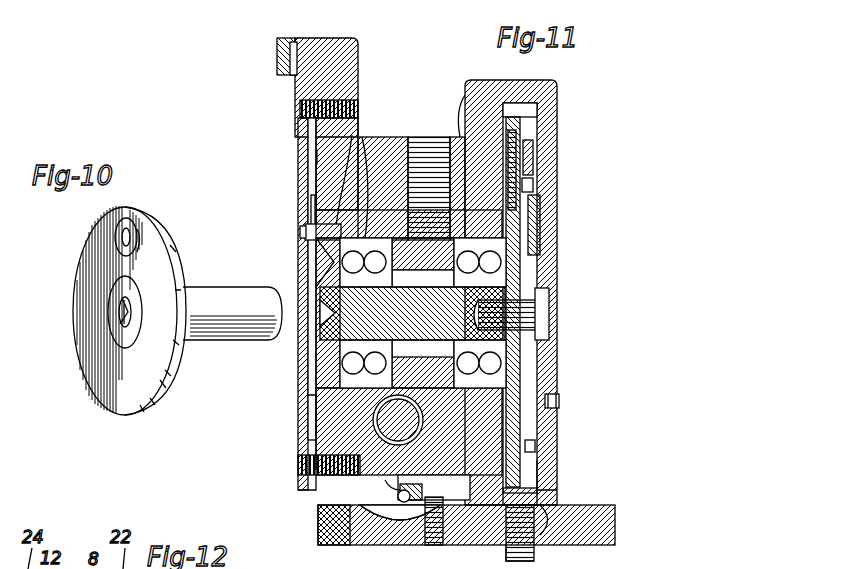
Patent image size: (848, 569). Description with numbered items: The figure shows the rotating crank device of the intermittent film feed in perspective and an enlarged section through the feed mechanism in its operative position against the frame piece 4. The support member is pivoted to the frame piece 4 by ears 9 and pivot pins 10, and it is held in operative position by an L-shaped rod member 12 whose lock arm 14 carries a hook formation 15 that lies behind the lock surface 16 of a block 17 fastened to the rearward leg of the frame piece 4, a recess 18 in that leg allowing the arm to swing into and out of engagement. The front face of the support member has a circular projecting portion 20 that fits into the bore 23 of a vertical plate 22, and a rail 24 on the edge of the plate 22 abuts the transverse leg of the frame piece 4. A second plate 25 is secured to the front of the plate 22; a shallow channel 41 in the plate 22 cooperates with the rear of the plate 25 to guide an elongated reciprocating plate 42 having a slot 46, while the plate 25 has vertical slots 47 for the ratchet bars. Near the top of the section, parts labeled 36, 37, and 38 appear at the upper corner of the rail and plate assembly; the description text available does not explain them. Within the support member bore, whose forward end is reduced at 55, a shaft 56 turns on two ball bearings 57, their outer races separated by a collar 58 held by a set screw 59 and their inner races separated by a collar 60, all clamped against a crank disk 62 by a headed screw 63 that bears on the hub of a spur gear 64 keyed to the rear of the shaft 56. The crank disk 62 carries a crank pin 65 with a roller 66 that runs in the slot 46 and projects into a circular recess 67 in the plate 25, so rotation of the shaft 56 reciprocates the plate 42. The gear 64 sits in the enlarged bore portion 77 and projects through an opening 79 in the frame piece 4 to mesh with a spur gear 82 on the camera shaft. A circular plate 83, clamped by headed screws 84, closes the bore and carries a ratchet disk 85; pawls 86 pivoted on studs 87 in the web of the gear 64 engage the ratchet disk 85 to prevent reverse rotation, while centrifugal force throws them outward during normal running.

In FIG. 11, the frame piece 4 is at (600, 508).
In FIG. 11, the ears 9 is at (550, 500).
In FIG. 11, the pivot pins 10 is at (548, 512).
In FIG. 11, the rod member 12 is at (300, 462).
In FIG. 11, the lock arm 14 is at (395, 487).
In FIG. 11, the hook formation 15 is at (388, 520).
In FIG. 11, the lock surface 16 is at (410, 500).
In FIG. 11, the block 17 is at (440, 522).
In FIG. 11, the recess 18 is at (345, 520).
In FIG. 11, the projecting portion 20 is at (376, 137).
In FIG. 11, the plate 22 is at (352, 98).
In FIG. 11, the bore 23 is at (362, 128).
In FIG. 11, the rail 24 is at (362, 62).
In FIG. 11, the plate 25 is at (300, 152).
In FIG. 11, the lug 36 is at (292, 40).
In FIG. 11, the pin 37 is at (291, 72).
In FIG. 11, the threads 38 is at (280, 66).
In FIG. 11, the channel 41 is at (305, 162).
In FIG. 11, the plate 42 is at (305, 172).
In FIG. 11, the slot 46 is at (305, 200).
In FIG. 11, the slots 47 is at (300, 182).
In FIG. 11, the reduced bore portion 55 is at (404, 137).
In FIG. 10, the shaft 56 is at (205, 292).
In FIG. 11, the shaft 56 is at (540, 297).
In FIG. 11, the ball bearings 57 is at (302, 268).
In FIG. 11, the collar 58 is at (460, 137).
In FIG. 11, the set screw 59 is at (450, 137).
In FIG. 11, the collar 60 is at (548, 280).
In FIG. 10, the crank disk 62 is at (78, 322).
In FIG. 11, the crank disk 62 is at (305, 408).
In FIG. 11, the screw 63 is at (545, 322).
In FIG. 11, the spur gear 64 is at (528, 128).
In FIG. 10, the crank pin 65 is at (118, 237).
In FIG. 11, the crank pin 65 is at (300, 236).
In FIG. 10, the roller 66 is at (116, 250).
In FIG. 11, the roller 66 is at (300, 226).
In FIG. 11, the circular recess 67 is at (308, 382).
In FIG. 11, the enlarged bore portion 77 is at (543, 104).
In FIG. 11, the opening 79 is at (505, 540).
In FIG. 11, the spur gear 82 is at (535, 550).
In FIG. 11, the circular plate 83 is at (536, 148).
In FIG. 11, the headed screws 84 is at (560, 398).
In FIG. 11, the ratchet disk 85 is at (557, 210).
In FIG. 11, the pawls 86 is at (536, 175).
In FIG. 11, the studs 87 is at (540, 460).